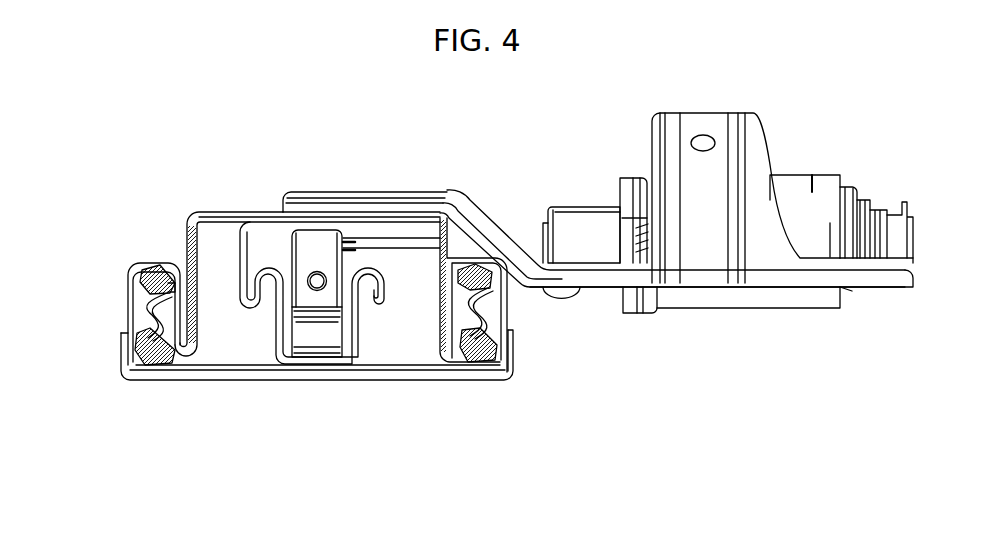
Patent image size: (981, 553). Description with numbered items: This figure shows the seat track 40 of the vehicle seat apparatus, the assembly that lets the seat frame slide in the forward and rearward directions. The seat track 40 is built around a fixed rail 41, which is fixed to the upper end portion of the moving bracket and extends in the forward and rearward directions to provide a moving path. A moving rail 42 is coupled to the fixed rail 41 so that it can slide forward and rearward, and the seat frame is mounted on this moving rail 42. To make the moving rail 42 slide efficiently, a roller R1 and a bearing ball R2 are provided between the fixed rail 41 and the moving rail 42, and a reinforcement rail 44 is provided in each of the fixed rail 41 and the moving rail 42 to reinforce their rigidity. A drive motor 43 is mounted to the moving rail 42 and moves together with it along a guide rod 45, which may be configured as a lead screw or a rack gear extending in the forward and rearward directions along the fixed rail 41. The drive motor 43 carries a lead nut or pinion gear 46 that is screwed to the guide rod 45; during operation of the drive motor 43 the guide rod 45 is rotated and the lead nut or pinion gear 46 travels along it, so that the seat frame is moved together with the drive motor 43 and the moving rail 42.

The seat track 40 is at (444, 400).
The fixed rail 41 is at (128, 298).
The roller R1 is at (157, 266).
The bearing ball R2 is at (160, 362).
The moving rail 42 is at (205, 212).
The drive motor 43 is at (812, 184).
The reinforcement rail 44 is at (242, 268).
The guide rod 45 is at (319, 273).
The lead nut or pinion gear 46 is at (307, 243).